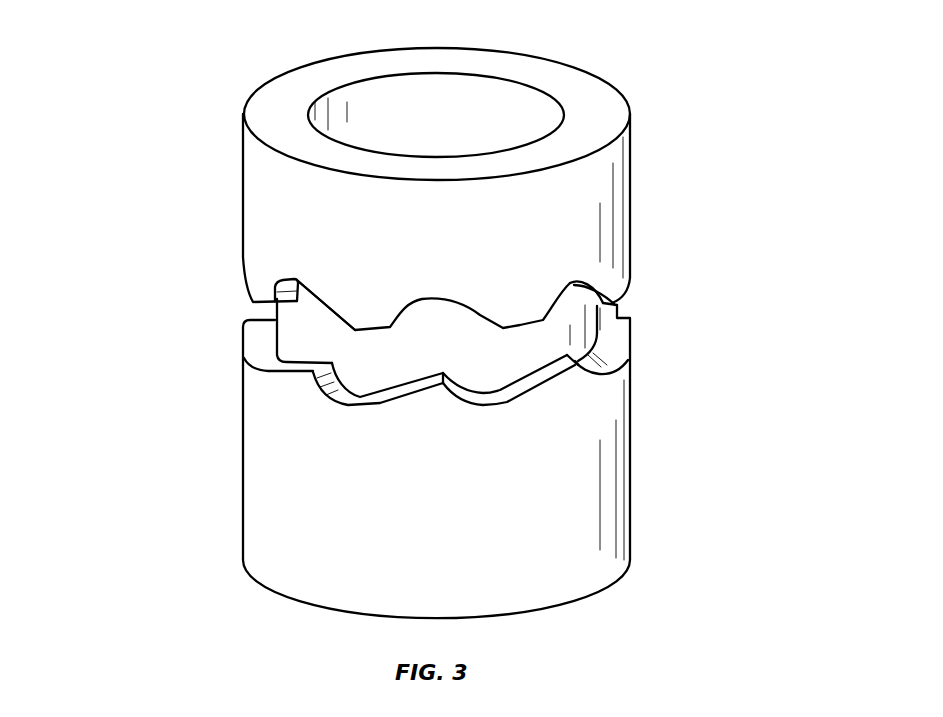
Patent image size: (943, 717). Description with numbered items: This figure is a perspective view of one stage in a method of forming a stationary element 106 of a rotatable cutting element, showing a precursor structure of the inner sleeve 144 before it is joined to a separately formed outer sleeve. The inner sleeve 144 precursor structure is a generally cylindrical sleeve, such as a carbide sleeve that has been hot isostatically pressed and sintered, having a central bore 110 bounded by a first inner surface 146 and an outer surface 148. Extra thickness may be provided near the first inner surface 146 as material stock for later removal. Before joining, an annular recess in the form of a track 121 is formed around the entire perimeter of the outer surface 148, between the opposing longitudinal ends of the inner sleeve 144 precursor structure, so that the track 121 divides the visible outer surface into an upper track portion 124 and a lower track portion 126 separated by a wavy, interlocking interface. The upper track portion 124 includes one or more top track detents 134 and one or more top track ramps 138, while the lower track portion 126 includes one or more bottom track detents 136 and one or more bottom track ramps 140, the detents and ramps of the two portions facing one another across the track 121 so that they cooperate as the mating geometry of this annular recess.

The stationary element 106 is at (157, 92).
The central bore 110 is at (467, 98).
The first inner surface 146 is at (563, 112).
The outer surface 148 is at (617, 168).
The inner sleeve 144 is at (570, 238).
The upper track portion 124 is at (603, 280).
The track 121 is at (563, 335).
The lower track portion 126 is at (590, 400).
The top track detent 134 is at (252, 295).
The top track ramp 138 is at (328, 308).
The bottom track detent 136 is at (334, 389).
The bottom track ramp 140 is at (393, 400).